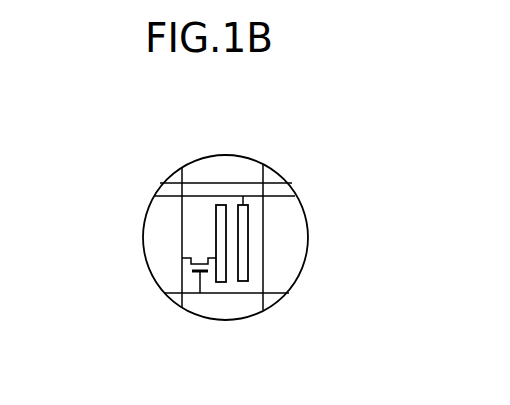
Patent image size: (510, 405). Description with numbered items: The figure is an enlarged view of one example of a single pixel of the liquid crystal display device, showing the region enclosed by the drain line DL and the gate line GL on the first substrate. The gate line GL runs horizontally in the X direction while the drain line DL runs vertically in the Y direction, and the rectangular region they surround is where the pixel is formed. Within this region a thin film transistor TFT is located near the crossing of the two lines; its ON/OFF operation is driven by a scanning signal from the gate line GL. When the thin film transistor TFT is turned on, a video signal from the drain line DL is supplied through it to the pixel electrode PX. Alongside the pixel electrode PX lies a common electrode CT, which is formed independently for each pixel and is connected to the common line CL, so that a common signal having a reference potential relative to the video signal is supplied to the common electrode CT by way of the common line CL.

The common line CL is at (220, 195).
The pixel electrode PX is at (216, 223).
The drain line DL is at (182, 238).
The thin film transistor TFT is at (190, 268).
The gate line GL is at (212, 293).
The common electrode CT is at (243, 281).